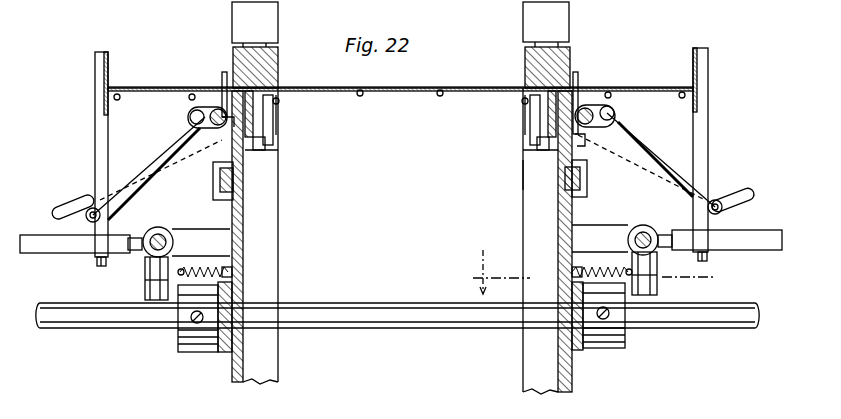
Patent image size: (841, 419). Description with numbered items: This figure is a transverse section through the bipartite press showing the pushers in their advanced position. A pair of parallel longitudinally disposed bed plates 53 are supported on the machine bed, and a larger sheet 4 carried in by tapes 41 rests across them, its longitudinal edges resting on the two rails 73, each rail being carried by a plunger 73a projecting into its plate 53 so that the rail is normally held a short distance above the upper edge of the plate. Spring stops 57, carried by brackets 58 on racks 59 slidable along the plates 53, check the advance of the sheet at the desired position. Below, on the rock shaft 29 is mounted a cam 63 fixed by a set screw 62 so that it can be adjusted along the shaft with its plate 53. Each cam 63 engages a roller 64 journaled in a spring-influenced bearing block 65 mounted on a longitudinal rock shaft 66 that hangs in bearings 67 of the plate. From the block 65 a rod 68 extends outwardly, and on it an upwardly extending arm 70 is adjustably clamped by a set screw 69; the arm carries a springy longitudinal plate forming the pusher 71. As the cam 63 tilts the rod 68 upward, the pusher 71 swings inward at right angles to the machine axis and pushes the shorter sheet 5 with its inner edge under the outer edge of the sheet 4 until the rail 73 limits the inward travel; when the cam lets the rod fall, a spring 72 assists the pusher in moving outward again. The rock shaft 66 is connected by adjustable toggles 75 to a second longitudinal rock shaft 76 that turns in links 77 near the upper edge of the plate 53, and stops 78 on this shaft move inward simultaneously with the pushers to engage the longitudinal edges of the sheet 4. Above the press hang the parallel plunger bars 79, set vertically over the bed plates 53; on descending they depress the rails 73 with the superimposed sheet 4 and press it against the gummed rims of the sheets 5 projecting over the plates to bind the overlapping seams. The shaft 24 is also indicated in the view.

The larger paper sheet 4 is at (427, 88).
The shorter sheet 5 is at (184, 88).
The center line / axis 24 is at (584, 272).
The rock shaft 29 is at (712, 322).
The tapes 41 is at (190, 99).
The bed plate 53 is at (522, 170).
The spring stop 57 is at (274, 125).
The bracket 58 is at (280, 102).
The rack 59 is at (234, 180).
The set screw 62 is at (604, 320).
The cam 63 is at (638, 348).
The roller 64 is at (152, 300).
The bearing block 65 is at (145, 272).
The rock shaft 66 is at (162, 238).
The bearing 67 is at (400, 240).
The rod 68 is at (44, 243).
The set screw 69 is at (98, 263).
The arm 70 is at (95, 143).
The pusher 71 is at (109, 66).
The spring 72 is at (232, 272).
The rail 73 is at (262, 94).
The plunger 73a is at (262, 148).
The toggle 75 is at (150, 178).
The rock shaft 76 is at (210, 128).
The link 77 is at (220, 140).
The stop 78 is at (224, 72).
The plunger bar 79 is at (279, 52).